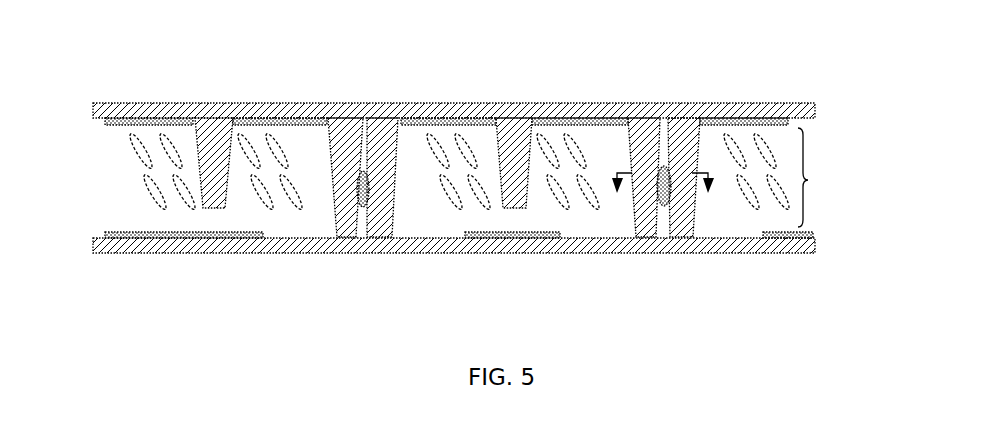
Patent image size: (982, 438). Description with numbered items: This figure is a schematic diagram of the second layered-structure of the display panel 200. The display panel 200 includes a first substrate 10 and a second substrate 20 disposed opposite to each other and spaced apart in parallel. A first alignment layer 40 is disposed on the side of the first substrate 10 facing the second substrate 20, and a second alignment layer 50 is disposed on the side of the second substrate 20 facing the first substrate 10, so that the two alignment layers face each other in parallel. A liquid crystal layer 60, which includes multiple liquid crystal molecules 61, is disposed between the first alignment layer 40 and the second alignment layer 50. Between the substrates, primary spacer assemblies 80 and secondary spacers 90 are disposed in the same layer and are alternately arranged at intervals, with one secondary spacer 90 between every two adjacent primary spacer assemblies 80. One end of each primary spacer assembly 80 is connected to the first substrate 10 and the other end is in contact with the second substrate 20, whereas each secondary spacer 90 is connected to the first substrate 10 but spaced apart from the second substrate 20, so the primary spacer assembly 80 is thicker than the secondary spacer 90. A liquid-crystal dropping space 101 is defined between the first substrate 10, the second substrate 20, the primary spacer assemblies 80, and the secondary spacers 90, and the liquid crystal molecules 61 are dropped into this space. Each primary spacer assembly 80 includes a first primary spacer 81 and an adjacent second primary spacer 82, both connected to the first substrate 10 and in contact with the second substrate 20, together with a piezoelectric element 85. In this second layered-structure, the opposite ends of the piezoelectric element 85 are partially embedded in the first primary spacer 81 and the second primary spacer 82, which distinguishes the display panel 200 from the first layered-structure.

The display panel 200 is at (487, 26).
The first substrate 10 is at (777, 113).
The second substrate 20 is at (804, 244).
The first alignment layer 40 is at (738, 122).
The second alignment layer 50 is at (777, 238).
The liquid crystal layer 60 is at (814, 177).
The liquid crystal molecules 61 is at (452, 197).
The primary spacer assembly 80 is at (648, 123).
The first primary spacer 81 is at (347, 142).
The second primary spacer 82 is at (387, 141).
The piezoelectric element 85 is at (363, 207).
The secondary spacer 90 is at (517, 124).
The liquid-crystal dropping space 101 is at (499, 197).